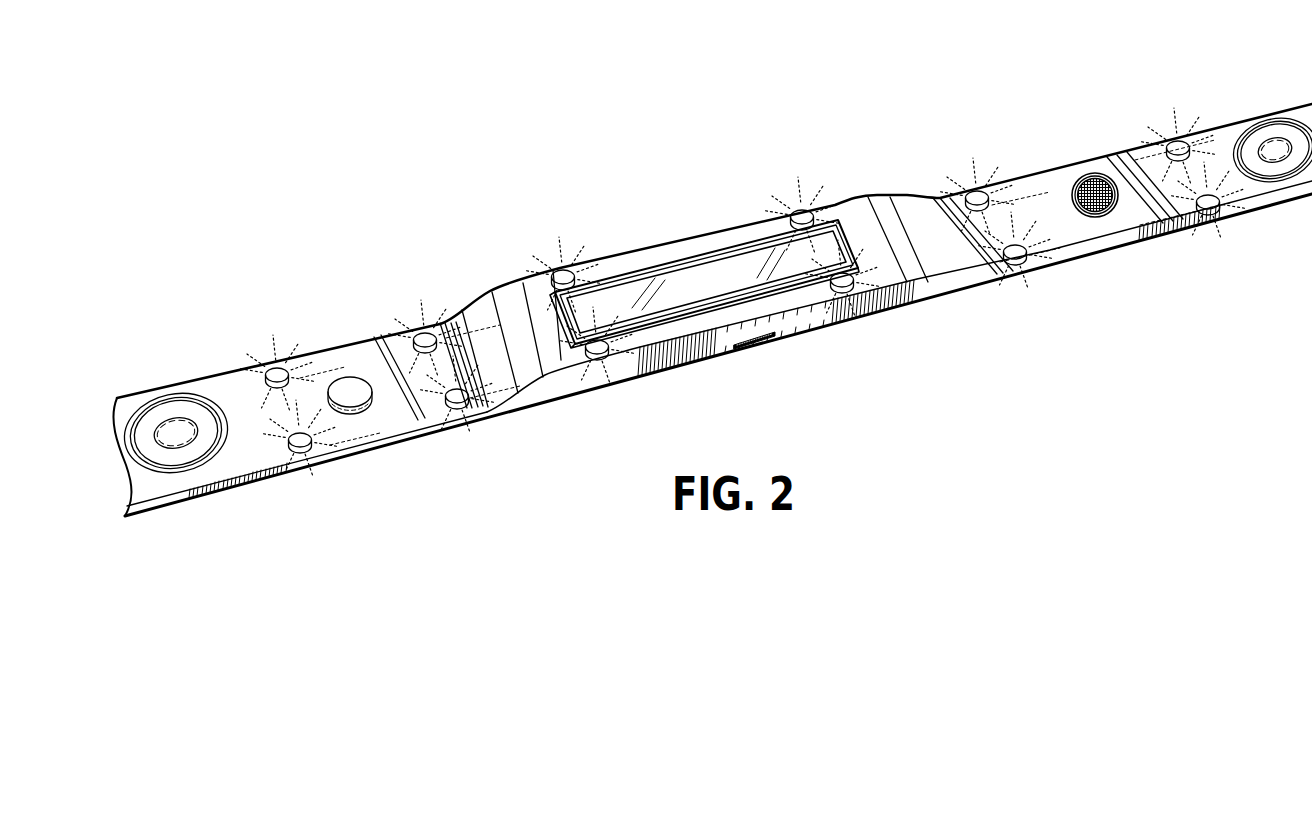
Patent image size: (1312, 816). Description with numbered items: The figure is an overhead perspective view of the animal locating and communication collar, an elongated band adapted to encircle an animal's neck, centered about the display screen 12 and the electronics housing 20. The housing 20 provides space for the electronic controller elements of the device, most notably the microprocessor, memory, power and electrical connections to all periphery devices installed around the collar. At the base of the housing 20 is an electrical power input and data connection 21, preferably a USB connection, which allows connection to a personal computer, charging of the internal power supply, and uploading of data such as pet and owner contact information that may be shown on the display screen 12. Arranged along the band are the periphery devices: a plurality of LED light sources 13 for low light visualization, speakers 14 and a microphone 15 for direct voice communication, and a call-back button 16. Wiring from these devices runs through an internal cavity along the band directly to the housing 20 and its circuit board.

The display screen 12 is at (697, 267).
The LED light sources 13 is at (1022, 253).
The speakers 14 is at (172, 412).
The microphone 15 is at (1088, 173).
The call-back button 16 is at (353, 387).
The electronics housing 20 is at (917, 227).
The electrical power input and data connection 21 is at (760, 349).